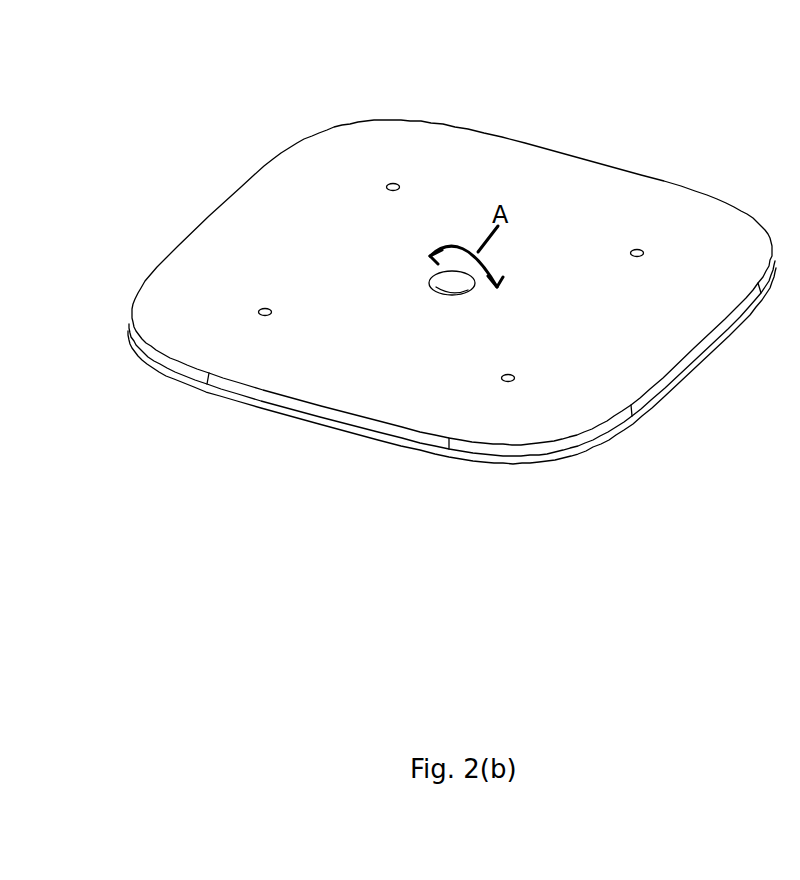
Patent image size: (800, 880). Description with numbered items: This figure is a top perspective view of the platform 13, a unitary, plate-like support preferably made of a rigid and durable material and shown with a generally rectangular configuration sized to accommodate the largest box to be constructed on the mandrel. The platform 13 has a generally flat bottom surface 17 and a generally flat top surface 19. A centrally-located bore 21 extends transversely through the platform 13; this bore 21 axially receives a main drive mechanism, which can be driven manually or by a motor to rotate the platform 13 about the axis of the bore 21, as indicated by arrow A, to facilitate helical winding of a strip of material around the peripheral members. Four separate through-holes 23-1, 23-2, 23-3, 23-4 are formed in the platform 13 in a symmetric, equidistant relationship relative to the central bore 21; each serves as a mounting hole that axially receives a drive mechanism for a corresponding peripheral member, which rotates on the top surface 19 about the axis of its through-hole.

The platform 13 is at (451, 323).
The bottom surface 17 is at (703, 353).
The top surface 19 is at (283, 182).
The bore 21 is at (440, 293).
The through-hole 23-1 is at (265, 320).
The through-hole 23-2 is at (395, 181).
The through-hole 23-3 is at (638, 247).
The through-hole 23-4 is at (505, 385).